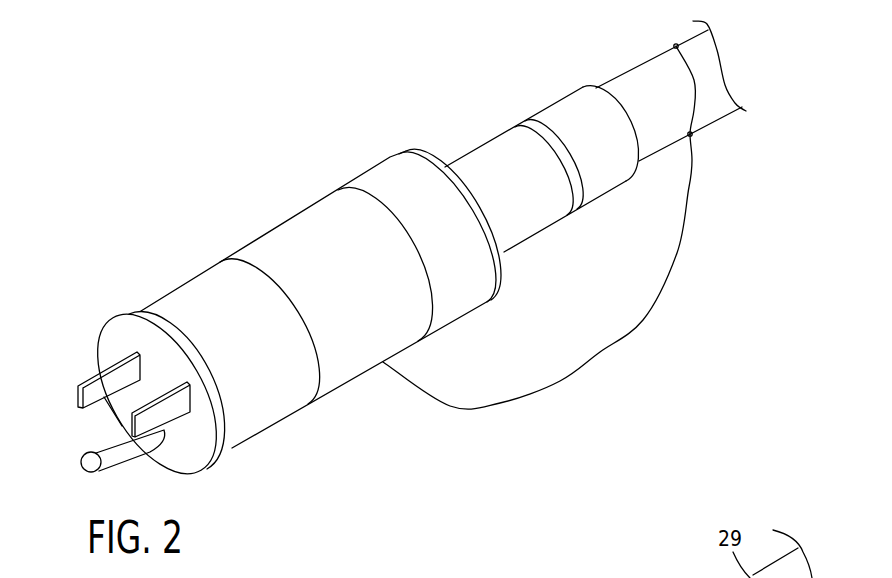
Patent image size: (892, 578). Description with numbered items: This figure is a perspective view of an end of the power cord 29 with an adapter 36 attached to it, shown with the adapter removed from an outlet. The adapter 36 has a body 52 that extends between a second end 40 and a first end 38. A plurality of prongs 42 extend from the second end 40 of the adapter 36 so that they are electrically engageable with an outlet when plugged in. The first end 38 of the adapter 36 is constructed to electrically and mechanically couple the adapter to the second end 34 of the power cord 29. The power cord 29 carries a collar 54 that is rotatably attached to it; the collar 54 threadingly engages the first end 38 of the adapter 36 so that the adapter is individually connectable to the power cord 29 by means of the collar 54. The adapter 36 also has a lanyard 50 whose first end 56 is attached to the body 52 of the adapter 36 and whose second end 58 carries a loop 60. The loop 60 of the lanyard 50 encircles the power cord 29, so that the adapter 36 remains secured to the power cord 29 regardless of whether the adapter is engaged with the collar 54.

The power cord 29 is at (653, 88).
The second end of power cord 34 is at (444, 130).
The adapter 36 is at (310, 232).
The first end of adapter 38 is at (334, 170).
The second end of adapter 40 is at (80, 320).
The plurality of prongs 42 is at (80, 464).
The lanyard 50 is at (590, 353).
The body 52 is at (332, 289).
The collar 54 is at (435, 236).
The first end of lanyard 56 is at (365, 399).
The second end of lanyard 58 is at (731, 136).
The loop 60 is at (695, 81).